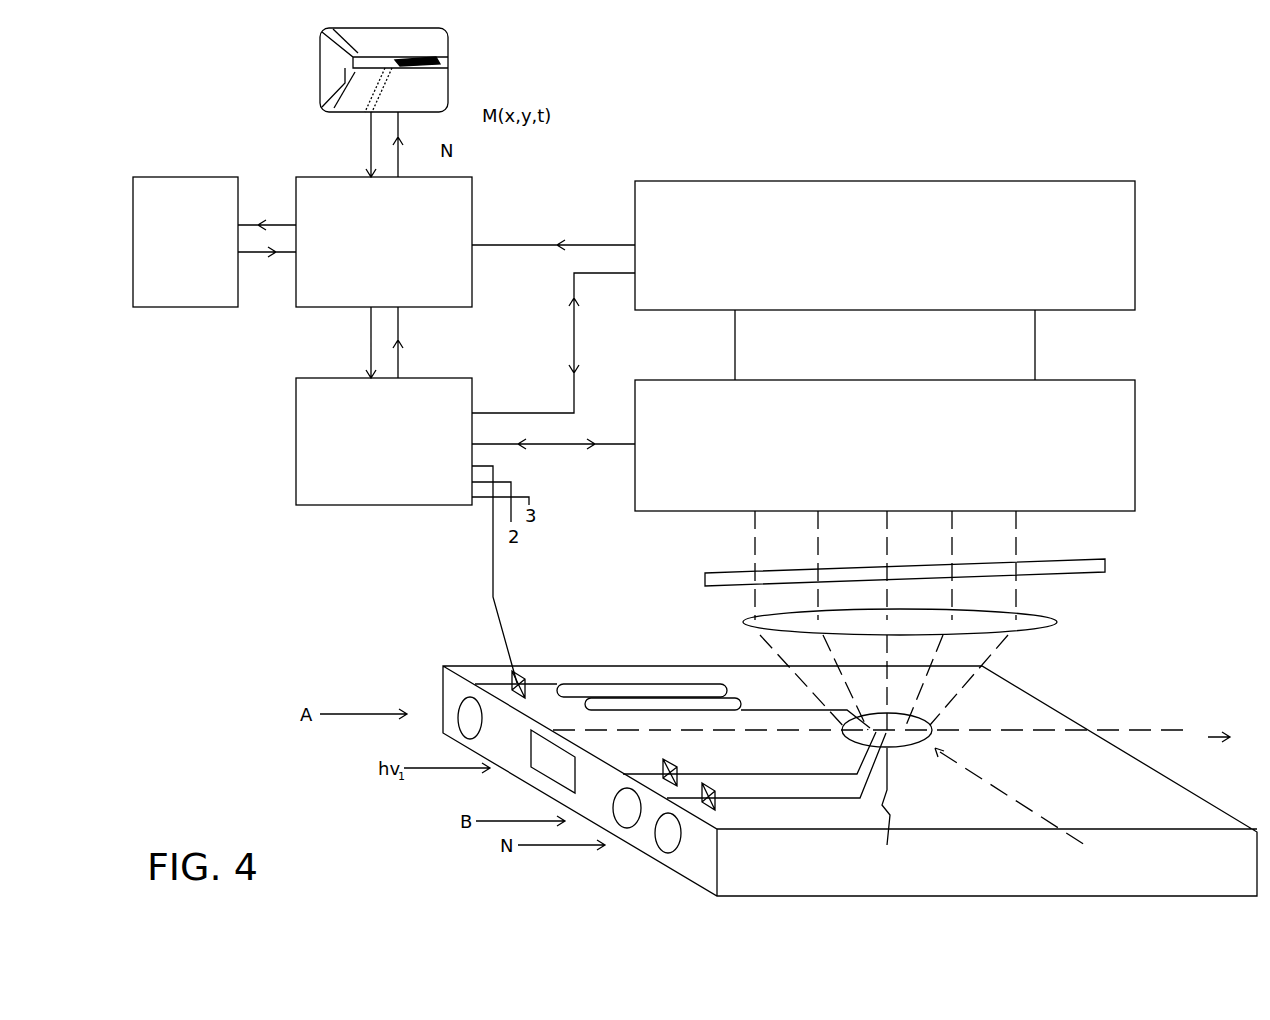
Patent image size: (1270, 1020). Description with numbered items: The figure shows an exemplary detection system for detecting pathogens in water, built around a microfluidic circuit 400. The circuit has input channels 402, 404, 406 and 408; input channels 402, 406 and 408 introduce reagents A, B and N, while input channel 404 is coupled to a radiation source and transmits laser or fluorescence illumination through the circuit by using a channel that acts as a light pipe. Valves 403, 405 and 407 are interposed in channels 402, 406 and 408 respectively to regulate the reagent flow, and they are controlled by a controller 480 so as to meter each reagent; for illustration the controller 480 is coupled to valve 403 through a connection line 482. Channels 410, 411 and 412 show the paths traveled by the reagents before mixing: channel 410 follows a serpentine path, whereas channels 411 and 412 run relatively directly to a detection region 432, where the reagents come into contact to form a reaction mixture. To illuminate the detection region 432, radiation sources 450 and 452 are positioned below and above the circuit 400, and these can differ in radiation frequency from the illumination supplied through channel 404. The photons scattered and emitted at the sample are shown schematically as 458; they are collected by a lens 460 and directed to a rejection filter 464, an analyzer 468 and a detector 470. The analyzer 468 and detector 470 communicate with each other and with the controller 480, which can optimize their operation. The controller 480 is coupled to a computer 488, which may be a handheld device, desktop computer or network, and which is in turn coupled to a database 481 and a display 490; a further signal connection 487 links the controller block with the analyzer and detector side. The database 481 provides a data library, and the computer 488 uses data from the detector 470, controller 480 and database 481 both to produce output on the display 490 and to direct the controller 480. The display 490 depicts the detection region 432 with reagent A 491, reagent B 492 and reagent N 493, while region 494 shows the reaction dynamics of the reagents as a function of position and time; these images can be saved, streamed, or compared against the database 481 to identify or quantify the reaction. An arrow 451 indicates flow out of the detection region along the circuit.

The microfluidic circuit 400 is at (670, 866).
The input channel 402 is at (363, 706).
The valve 403 is at (514, 680).
The input channel 404 is at (447, 759).
The valve 405 is at (680, 768).
The input channel 406 is at (520, 812).
The valve 407 is at (716, 793).
The input channel 408 is at (561, 836).
The channel 410 is at (640, 683).
The channel 411 is at (812, 775).
The channel 412 is at (758, 800).
The detection region 432 is at (892, 807).
The radiation source 450 is at (1031, 806).
The output flow 451 is at (891, 729).
The radiation source 452 is at (960, 730).
The scattered and emitted photons 458 is at (983, 656).
The lens 460 is at (1058, 626).
The rejection filter 464 is at (1112, 566).
The analyzer 468 is at (885, 445).
The detector 470 is at (885, 245).
The controller 480 is at (384, 441).
The database 481 is at (185, 242).
The connection line 482 is at (493, 548).
The signal line 487 is at (576, 335).
The computer 488 is at (384, 242).
The display 490 is at (409, 93).
The reagent A 491 is at (334, 31).
The reagent B 492 is at (326, 113).
The reagent N 493 is at (398, 84).
The reaction dynamics region 494 is at (450, 68).